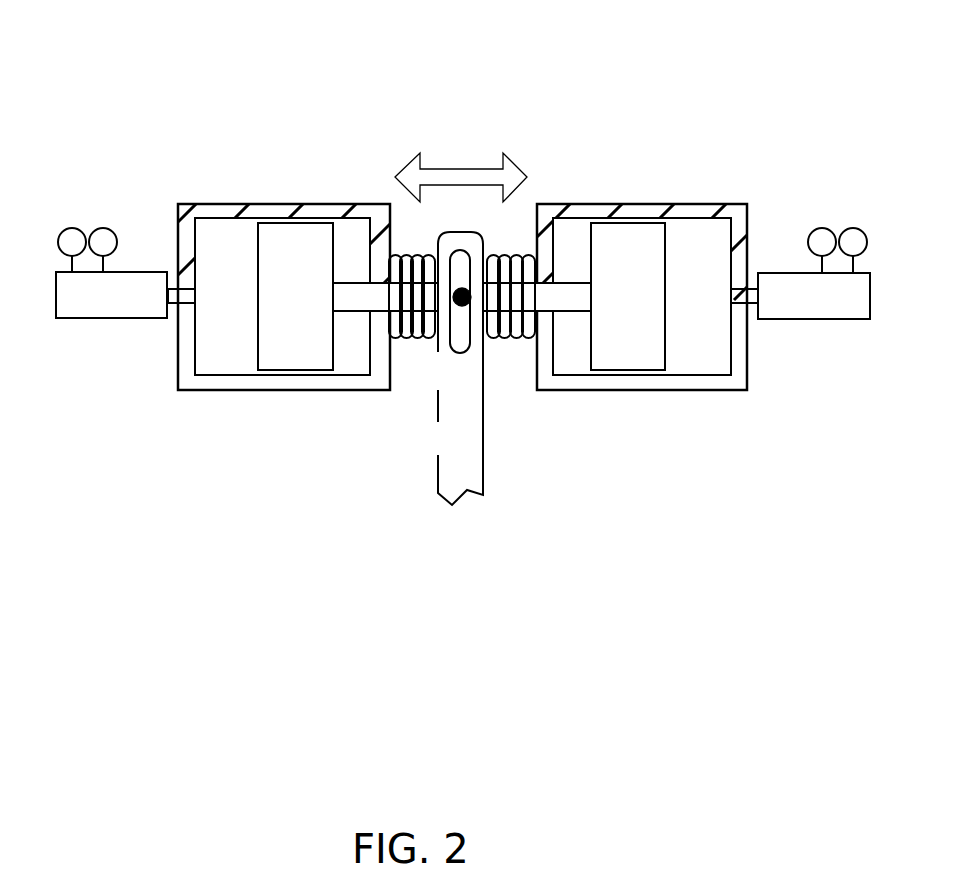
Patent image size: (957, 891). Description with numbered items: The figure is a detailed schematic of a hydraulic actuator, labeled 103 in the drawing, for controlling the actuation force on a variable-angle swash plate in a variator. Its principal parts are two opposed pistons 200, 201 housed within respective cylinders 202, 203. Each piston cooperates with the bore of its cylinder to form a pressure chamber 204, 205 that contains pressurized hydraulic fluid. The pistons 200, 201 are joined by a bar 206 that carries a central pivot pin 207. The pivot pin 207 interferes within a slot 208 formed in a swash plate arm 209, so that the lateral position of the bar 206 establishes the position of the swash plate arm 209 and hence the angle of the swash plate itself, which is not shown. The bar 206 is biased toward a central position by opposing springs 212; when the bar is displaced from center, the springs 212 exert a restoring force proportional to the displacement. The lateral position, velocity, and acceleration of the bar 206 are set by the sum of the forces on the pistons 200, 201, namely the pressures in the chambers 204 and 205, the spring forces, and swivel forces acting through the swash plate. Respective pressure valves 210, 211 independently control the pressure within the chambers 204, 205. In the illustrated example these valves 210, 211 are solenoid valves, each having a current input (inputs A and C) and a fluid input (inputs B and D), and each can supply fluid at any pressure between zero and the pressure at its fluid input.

The linear generator assembly 103 is at (552, 85).
The piston 200 is at (312, 228).
The piston 201 is at (625, 237).
The cylinder 202 is at (255, 203).
The cylinder 203 is at (690, 213).
The pressure chamber 204 is at (228, 357).
The pressure chamber 205 is at (690, 363).
The bar 206 is at (365, 287).
The central pivot pin 207 is at (462, 303).
The slot 208 is at (463, 355).
The swash plate arm 209 is at (453, 458).
The pressure valve 210 is at (113, 307).
The pressure valve 211 is at (810, 307).
The springs 212 is at (505, 338).